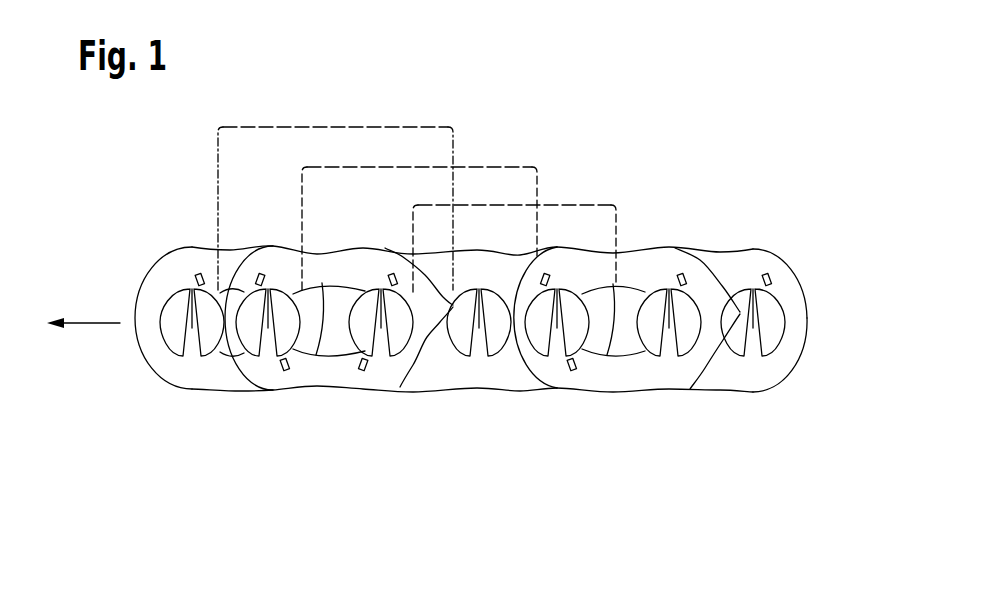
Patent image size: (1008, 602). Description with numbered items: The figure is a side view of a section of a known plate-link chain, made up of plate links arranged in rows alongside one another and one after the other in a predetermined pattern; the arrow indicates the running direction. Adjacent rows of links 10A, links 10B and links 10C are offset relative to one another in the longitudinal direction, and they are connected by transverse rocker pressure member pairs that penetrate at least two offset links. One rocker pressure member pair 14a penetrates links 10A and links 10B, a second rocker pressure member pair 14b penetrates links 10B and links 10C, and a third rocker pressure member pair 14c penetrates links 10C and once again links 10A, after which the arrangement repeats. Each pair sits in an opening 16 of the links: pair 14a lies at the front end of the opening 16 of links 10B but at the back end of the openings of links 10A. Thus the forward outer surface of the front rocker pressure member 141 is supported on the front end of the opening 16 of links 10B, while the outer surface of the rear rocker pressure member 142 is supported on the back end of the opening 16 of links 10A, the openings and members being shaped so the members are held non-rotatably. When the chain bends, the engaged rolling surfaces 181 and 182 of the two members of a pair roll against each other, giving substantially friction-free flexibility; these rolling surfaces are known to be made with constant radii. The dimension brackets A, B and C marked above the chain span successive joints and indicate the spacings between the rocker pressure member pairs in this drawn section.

The plate links 10A is at (180, 380).
The plate links 10B is at (313, 380).
The plate links 10C is at (717, 385).
The front rocker pressure member 141 is at (173, 300).
The rear rocker pressure member 142 is at (197, 290).
The rocker pressure member pair 14a is at (263, 370).
The rocker pressure member pair 14b is at (380, 370).
The rocker pressure member pair 14c is at (483, 374).
The opening 16 is at (348, 362).
The rolling surface 181 is at (773, 383).
The rolling surface 182 is at (762, 348).
The pitch A is at (514, 232).
The pitch B is at (335, 191).
The pitch C is at (419, 212).